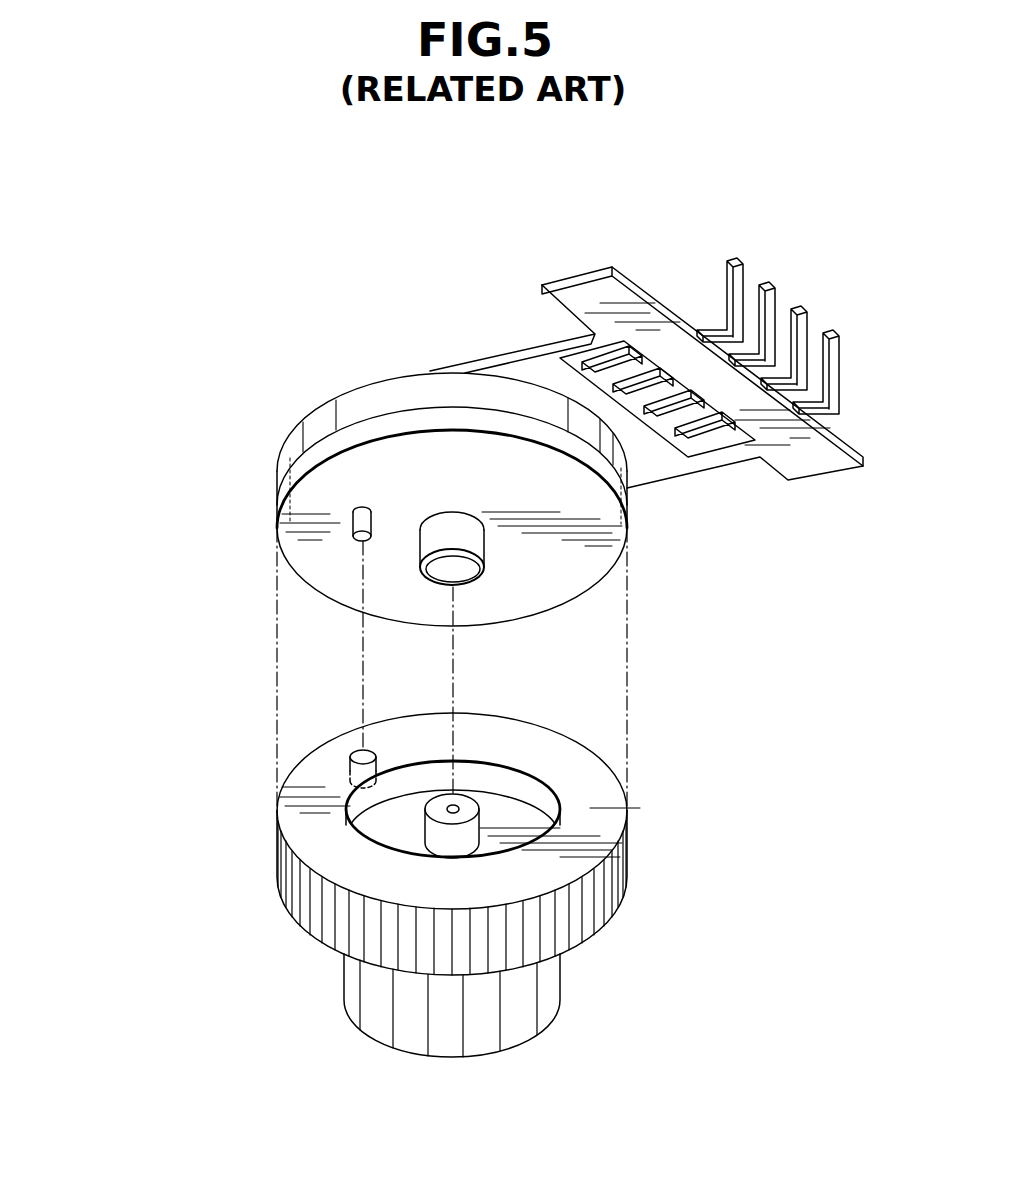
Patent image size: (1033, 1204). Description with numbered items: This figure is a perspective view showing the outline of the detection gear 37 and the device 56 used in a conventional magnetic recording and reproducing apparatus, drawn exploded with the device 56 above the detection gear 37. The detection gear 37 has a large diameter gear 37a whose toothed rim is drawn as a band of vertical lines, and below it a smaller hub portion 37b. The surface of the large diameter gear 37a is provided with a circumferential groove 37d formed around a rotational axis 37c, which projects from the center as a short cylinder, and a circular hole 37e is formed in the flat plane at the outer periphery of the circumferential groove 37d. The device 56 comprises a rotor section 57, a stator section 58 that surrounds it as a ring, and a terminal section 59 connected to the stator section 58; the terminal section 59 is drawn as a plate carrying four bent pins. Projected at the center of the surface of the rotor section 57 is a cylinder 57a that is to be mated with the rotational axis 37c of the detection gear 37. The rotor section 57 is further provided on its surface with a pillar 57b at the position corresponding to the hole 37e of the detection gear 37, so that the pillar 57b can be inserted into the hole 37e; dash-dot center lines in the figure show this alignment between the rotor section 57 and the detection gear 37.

The device 56 is at (374, 321).
The rotor section 57 is at (318, 556).
The cylinder 57a is at (480, 536).
The pillar 57b is at (348, 508).
The stator section 58 is at (340, 412).
The terminal section 59 is at (630, 278).
The detection gear 37 is at (283, 1020).
The large diameter gear 37a is at (628, 873).
The gear hub 37b is at (560, 1005).
The rotational axis 37c is at (478, 806).
The circumferential groove 37d is at (388, 828).
The circular hole 37e is at (355, 752).